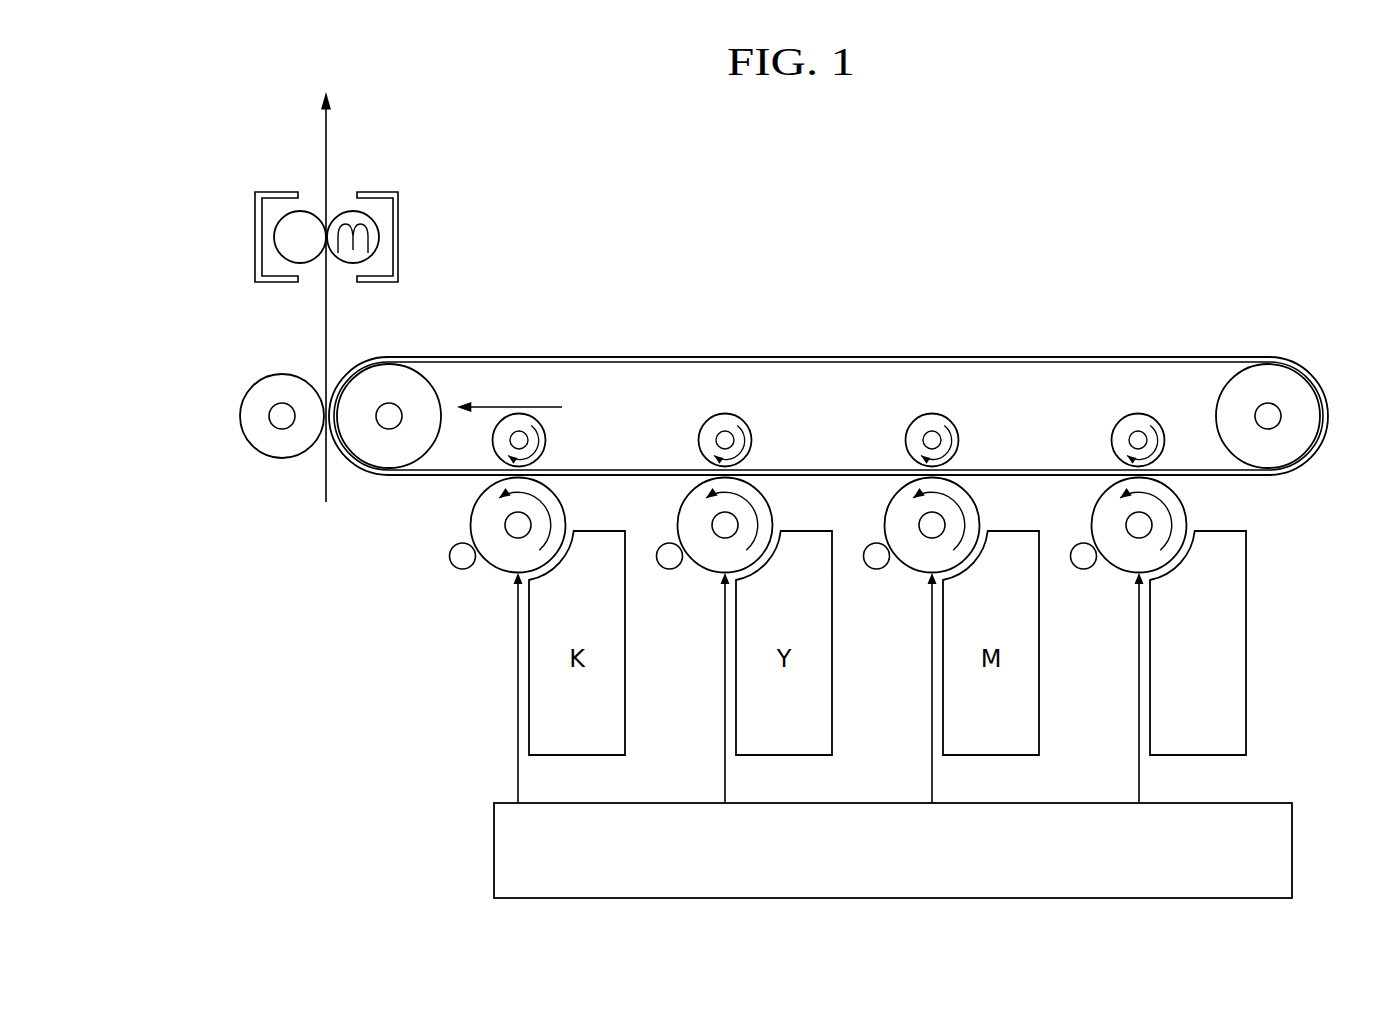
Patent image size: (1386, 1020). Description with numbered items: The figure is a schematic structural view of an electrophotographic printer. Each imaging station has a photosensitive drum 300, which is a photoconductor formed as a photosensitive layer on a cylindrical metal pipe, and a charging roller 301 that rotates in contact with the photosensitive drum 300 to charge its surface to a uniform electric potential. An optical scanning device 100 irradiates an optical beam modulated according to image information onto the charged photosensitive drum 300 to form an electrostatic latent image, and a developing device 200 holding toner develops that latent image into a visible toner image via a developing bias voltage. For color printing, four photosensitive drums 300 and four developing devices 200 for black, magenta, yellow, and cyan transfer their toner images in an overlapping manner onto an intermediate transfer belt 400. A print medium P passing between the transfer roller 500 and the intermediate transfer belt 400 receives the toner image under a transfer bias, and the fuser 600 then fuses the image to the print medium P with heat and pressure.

The optical scanning device 100 is at (1292, 850).
The developing device 200 is at (1198, 756).
The photosensitive drum 300 is at (1181, 500).
The charging roller 301 is at (1085, 570).
The intermediate transfer belt 400 is at (1035, 356).
The transfer roller 500 is at (242, 416).
The fuser 600 is at (240, 246).
The print medium P is at (326, 318).